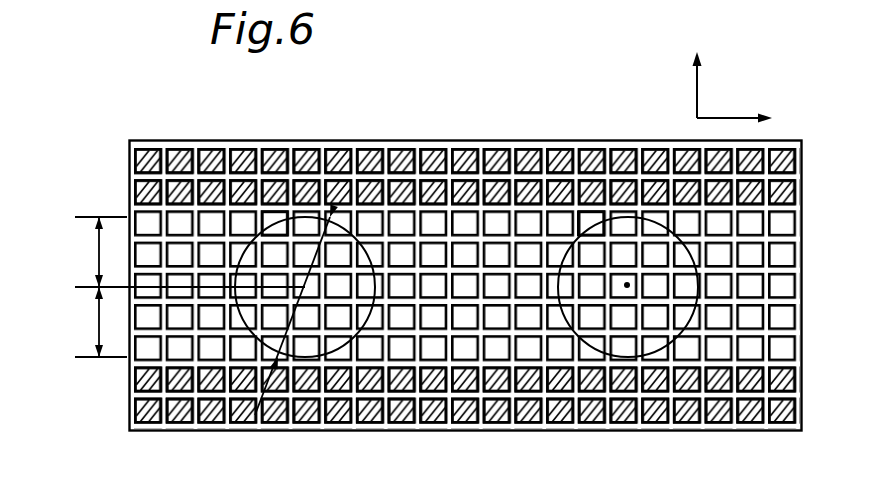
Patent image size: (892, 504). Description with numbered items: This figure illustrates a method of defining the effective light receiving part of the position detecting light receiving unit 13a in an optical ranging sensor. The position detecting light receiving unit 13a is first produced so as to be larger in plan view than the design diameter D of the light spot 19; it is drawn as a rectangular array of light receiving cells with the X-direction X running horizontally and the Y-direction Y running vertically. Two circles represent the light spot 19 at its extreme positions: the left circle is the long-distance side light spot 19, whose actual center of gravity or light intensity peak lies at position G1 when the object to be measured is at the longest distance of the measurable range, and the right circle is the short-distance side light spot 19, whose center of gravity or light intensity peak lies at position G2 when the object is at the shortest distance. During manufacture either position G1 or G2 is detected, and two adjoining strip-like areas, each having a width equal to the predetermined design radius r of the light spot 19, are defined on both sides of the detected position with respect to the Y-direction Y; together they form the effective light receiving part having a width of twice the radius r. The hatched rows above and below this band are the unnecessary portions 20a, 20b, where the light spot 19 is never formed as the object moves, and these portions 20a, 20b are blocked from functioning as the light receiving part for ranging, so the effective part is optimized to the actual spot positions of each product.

The position detecting light receiving unit 13a is at (489, 140).
The light spot 19 is at (268, 222).
The unnecessary portion 20a is at (112, 145).
The unnecessary portion 20b is at (112, 367).
The position of center of gravity of long-distance side light spot G1 is at (309, 337).
The position of center of gravity of short-distance side light spot G2 is at (627, 287).
The design diameter of light spot D is at (330, 217).
The design radius of light spot r is at (190, 287).
The X-direction X is at (744, 117).
The Y-direction Y is at (696, 70).